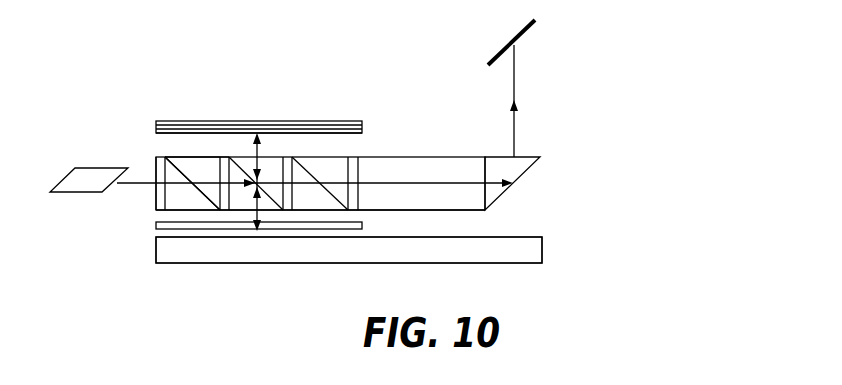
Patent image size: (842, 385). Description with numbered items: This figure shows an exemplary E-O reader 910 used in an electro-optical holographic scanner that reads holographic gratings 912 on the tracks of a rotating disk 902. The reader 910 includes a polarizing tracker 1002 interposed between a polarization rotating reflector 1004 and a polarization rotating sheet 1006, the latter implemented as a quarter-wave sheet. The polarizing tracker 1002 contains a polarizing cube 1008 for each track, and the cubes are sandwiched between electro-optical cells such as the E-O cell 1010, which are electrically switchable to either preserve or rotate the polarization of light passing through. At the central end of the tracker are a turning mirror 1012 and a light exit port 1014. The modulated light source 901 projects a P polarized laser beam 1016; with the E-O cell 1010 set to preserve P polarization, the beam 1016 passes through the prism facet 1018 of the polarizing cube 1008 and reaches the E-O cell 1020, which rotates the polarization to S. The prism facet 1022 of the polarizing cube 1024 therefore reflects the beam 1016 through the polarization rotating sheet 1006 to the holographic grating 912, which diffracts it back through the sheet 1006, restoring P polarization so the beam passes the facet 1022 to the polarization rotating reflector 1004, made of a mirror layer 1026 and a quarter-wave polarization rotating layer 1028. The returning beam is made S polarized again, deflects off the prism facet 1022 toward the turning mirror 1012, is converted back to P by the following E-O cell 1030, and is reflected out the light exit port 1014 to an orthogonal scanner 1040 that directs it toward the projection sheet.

The modulated light source 901 is at (82, 193).
The disk 902 is at (542, 250).
The E-O reader 910 is at (556, 140).
The holographic grating 912 is at (213, 263).
The polarizing tracker 1002 is at (447, 208).
The polarization rotating reflector 1004 is at (335, 121).
The polarization rotating sheet 1006 is at (155, 226).
The polarizing cube 1008 is at (180, 157).
The E-O cell 1010 is at (162, 157).
The turning mirror 1012 is at (530, 167).
The light exit port 1014 is at (522, 155).
The laser beam 1016 is at (193, 186).
The prism facet 1018 is at (133, 184).
The E-O cell 1020 is at (180, 157).
The prism facet 1022 is at (273, 207).
The polarizing cube 1024 is at (365, 134).
The mirror layer 1026 is at (155, 130).
The polarization rotating layer 1028 is at (227, 157).
The E-O cell 1030 is at (287, 157).
The orthogonal scanner 1040 is at (522, 27).